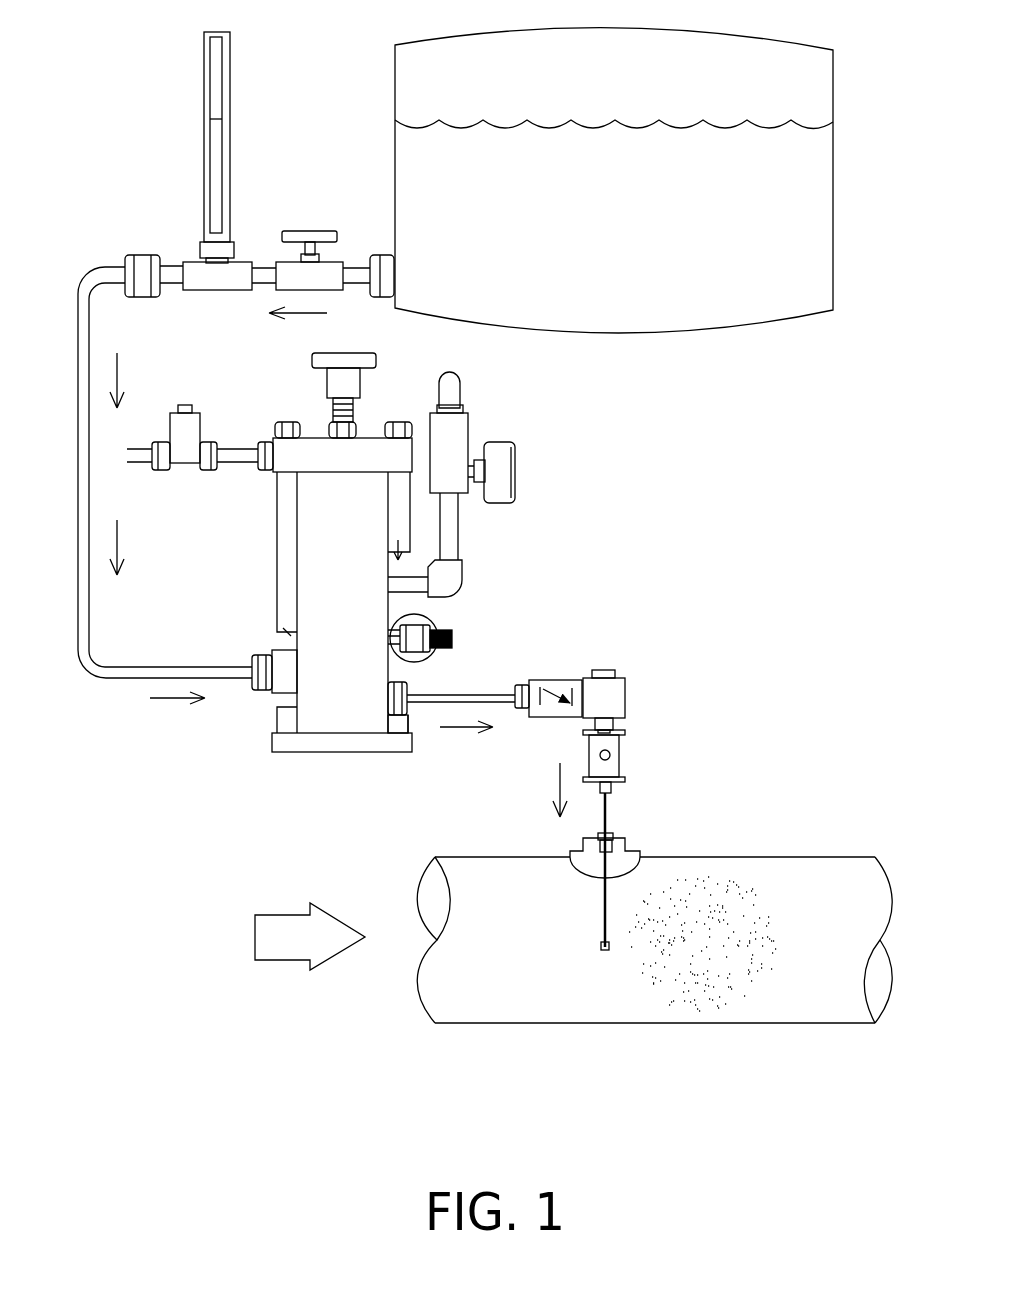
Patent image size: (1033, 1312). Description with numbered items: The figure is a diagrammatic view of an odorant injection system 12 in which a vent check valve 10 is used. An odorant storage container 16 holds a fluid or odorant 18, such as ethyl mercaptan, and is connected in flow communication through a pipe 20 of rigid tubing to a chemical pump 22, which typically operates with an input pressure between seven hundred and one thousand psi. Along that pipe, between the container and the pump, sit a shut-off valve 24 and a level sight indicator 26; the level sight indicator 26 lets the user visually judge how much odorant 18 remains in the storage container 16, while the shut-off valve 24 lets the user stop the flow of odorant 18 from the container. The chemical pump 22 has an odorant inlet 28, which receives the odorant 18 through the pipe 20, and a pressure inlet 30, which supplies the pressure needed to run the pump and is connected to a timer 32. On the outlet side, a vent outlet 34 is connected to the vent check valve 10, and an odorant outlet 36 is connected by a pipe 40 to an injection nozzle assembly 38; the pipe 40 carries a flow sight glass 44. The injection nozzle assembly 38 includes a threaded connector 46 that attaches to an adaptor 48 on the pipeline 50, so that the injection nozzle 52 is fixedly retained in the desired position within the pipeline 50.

The vent check valve 10 is at (470, 420).
The odorant injection system 12 is at (590, 487).
The odorant storage container 16 is at (392, 88).
The odorant 18 is at (754, 250).
The pipe 20 is at (264, 262).
The chemical pump 22 is at (277, 535).
The shut-off valve 24 is at (313, 230).
The level sight indicator 26 is at (205, 148).
The odorant inlet 28 is at (265, 692).
The pressure inlet 30 is at (268, 441).
The timer 32 is at (195, 412).
The vent outlet 34 is at (390, 592).
The odorant outlet 36 is at (410, 716).
The injection nozzle assembly 38 is at (612, 811).
The pipe 40 is at (465, 692).
The flow sight glass 44 is at (562, 680).
The threaded connector 46 is at (620, 757).
The adaptor 48 is at (626, 848).
The pipeline 50 is at (465, 855).
The injection nozzle 52 is at (602, 945).